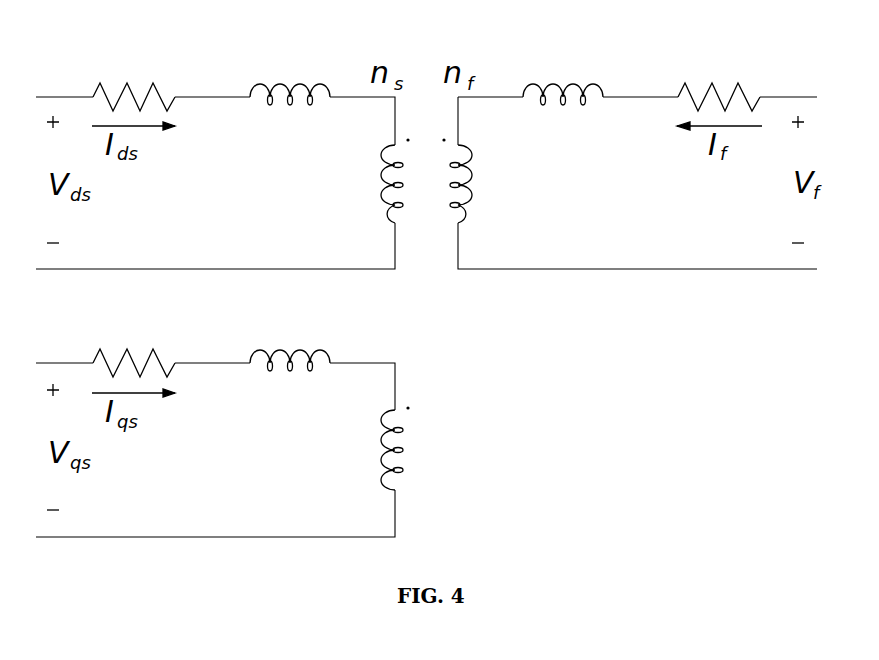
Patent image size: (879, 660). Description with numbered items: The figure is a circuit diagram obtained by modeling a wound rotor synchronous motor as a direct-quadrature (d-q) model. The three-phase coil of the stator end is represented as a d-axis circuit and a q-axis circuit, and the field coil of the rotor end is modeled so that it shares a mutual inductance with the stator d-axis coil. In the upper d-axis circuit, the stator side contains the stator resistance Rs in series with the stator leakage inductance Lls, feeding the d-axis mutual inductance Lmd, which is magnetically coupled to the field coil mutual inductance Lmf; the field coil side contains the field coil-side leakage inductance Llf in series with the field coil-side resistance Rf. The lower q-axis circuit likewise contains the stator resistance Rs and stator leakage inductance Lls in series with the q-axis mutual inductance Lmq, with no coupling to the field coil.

The d-axis and q-axis resistances in the stator end Rs is at (134, 77).
The d-axis and q-axis leakage inductances in the stator end Lls is at (290, 75).
The mutual inductance of the d-axis coil in the stator end Lmd is at (364, 180).
The mutual inductance of the field coil Lmf is at (488, 180).
The field coil-side leakage inductance Llf is at (563, 75).
The field coil-side resistance Rf is at (719, 77).
The mutual inductance of the q-axis coil in the stator end Lmq is at (364, 448).